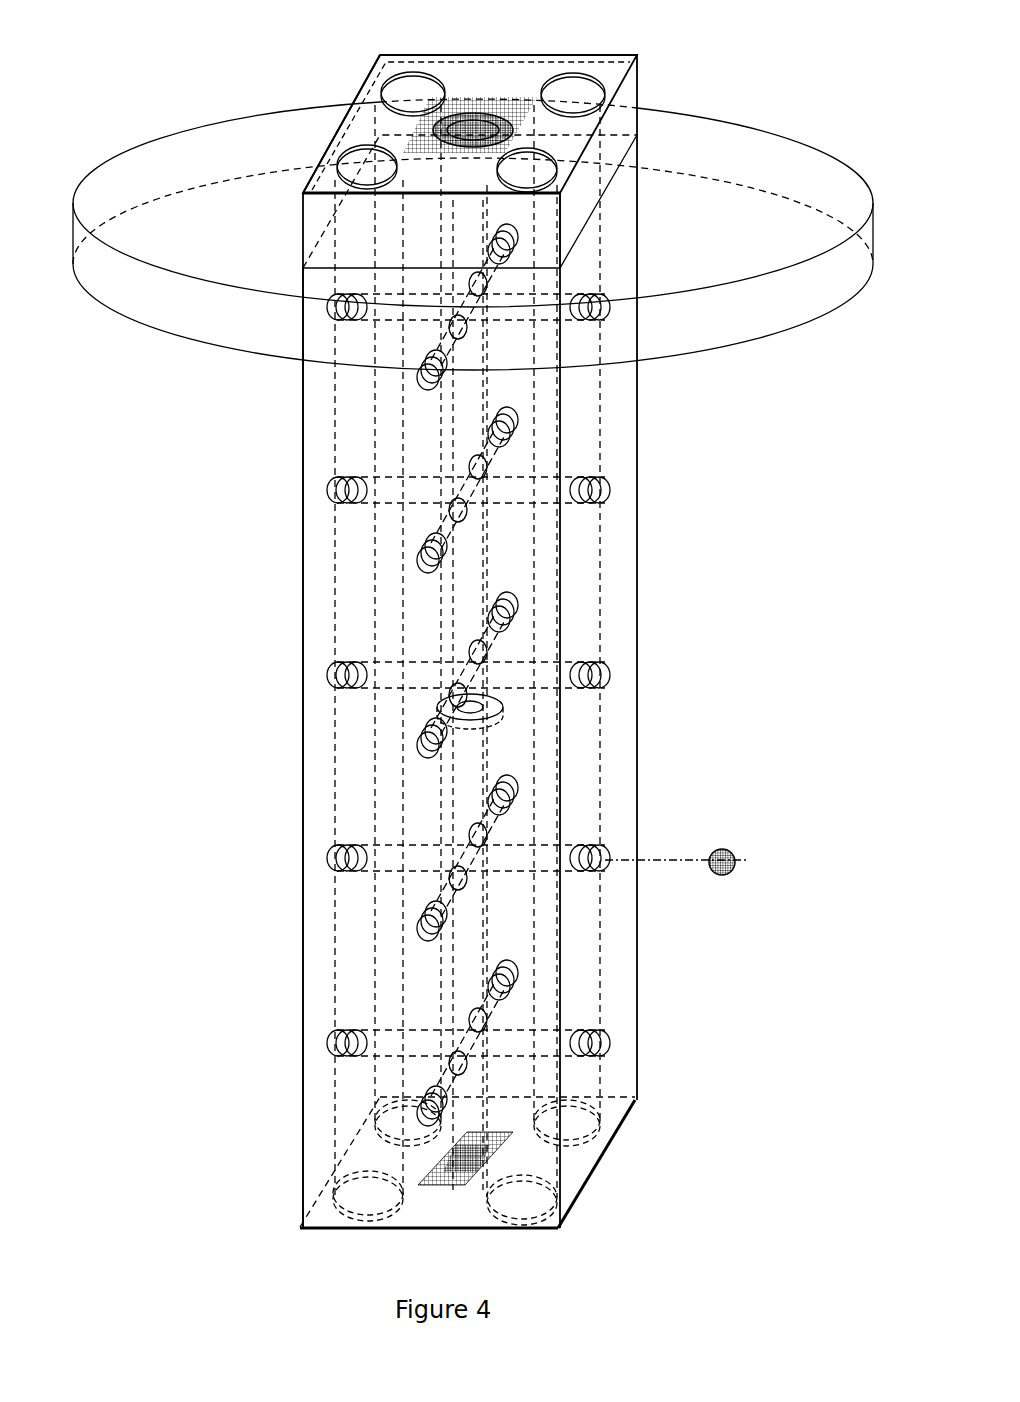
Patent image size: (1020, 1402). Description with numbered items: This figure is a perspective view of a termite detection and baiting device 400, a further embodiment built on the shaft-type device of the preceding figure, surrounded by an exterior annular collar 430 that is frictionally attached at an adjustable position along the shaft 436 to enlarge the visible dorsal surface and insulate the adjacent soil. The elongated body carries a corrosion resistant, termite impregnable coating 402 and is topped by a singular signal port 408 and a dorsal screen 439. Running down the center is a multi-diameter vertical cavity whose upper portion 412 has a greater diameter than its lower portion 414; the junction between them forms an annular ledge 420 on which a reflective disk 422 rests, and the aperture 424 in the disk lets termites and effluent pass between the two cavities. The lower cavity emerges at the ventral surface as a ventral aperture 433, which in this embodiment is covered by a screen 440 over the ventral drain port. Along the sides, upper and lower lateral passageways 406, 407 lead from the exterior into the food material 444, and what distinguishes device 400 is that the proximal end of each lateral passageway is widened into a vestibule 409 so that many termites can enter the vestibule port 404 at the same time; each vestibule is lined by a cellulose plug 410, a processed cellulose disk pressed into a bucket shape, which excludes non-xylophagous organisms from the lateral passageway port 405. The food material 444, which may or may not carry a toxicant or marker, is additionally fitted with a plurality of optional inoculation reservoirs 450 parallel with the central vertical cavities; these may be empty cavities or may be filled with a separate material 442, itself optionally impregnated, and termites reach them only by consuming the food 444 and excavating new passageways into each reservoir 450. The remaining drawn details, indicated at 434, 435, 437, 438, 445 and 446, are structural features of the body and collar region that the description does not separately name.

The termite device 400 is at (873, 43).
The housing block 402 is at (637, 540).
The vestibule port 404 is at (605, 495).
The lateral passageway port 405 is at (565, 495).
The lateral passageway 406 is at (548, 480).
The lateral passageway 407 is at (402, 870).
The top plate 408 is at (470, 80).
The vestibule 409 is at (592, 850).
The cellulose plug 410 is at (713, 875).
The central shaft 412 is at (505, 393).
The diagonal spring 414 is at (455, 765).
The collar rim 420 is at (490, 728).
The collar ring 422 is at (510, 697).
The guide tube 424 is at (440, 624).
The base disc 430 is at (277, 317).
The bottom plate 433 is at (467, 1185).
The cap lower edge 434 is at (638, 310).
The cap 435 is at (638, 178).
The housing side wall 436 is at (303, 648).
The disc top surface 437 is at (293, 128).
The disc rim 438 is at (287, 340).
The top opening 439 is at (523, 130).
The bottom opening 440 is at (432, 1157).
The material 442 is at (583, 582).
The food material 444 is at (612, 607).
The top plate corner edge 445 is at (367, 123).
The bottom front edge 446 is at (325, 1227).
The inoculation reservoir 450 is at (337, 702).